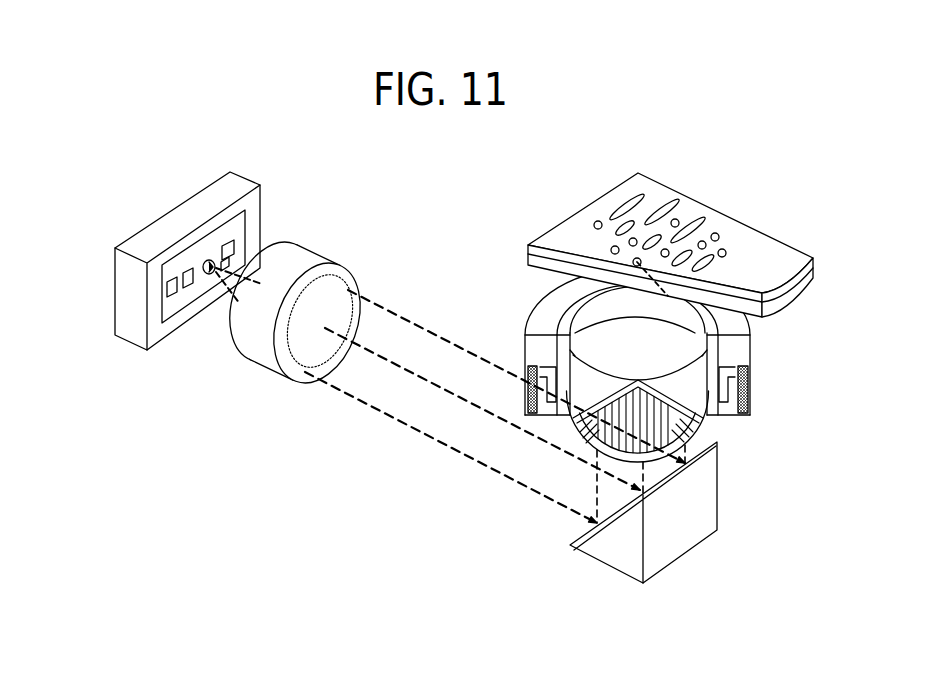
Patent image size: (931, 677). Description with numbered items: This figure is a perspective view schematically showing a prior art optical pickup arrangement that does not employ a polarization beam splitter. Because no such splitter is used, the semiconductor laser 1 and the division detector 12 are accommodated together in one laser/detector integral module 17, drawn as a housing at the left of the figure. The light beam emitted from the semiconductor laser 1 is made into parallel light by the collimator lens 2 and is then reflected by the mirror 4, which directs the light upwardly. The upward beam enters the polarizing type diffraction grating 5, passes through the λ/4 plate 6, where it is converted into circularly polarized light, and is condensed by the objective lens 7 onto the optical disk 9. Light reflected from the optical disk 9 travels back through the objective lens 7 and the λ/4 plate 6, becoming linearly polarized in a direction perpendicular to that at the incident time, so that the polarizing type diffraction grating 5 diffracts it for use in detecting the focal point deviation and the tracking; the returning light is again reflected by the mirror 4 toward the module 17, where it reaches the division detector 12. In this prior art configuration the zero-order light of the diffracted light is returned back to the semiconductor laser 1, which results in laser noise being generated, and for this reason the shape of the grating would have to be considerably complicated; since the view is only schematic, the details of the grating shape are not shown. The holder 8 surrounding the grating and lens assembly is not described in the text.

The semiconductor laser 1 is at (204, 262).
The division detector 12 is at (230, 242).
The laser/detector integral module 17 is at (133, 347).
The collimator lens 2 is at (247, 366).
The mirror 4 is at (583, 545).
The polarizing type diffraction grating 5 is at (707, 430).
The λ/4 plate 6 is at (675, 385).
The objective lens 7 is at (662, 350).
The lens holder 8 is at (750, 398).
The optical disk 9 is at (737, 233).